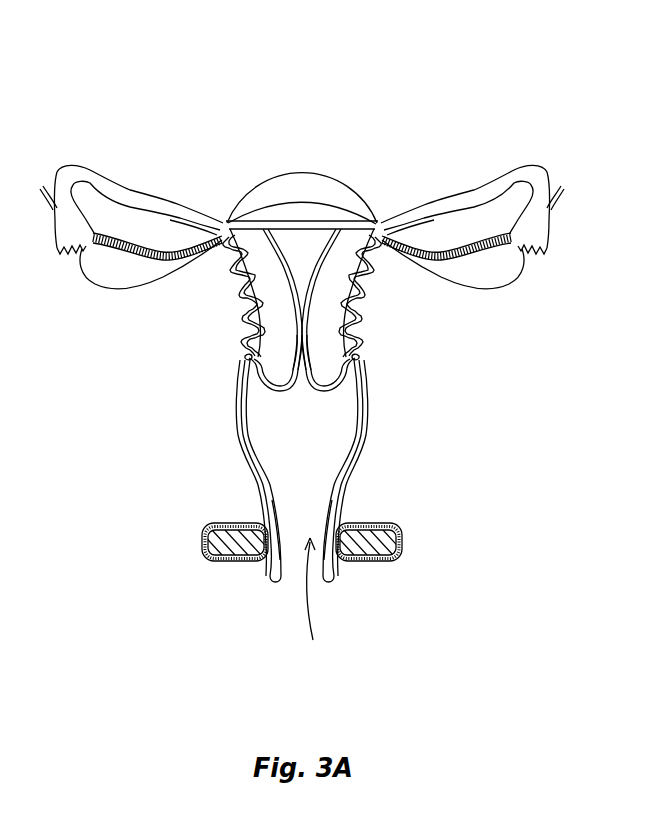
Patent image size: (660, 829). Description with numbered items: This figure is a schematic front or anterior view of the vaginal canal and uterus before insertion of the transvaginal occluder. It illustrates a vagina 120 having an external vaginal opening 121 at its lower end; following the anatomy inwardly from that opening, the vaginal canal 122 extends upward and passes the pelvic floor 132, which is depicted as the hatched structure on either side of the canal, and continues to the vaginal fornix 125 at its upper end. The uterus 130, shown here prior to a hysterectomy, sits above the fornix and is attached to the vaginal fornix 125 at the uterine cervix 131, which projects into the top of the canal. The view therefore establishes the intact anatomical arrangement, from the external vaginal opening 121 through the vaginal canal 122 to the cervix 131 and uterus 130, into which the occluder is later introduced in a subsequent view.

The uterus 130 is at (302, 242).
The uterine cervix 131 is at (321, 373).
The vaginal fornix 125 is at (281, 395).
The vagina 120 is at (322, 540).
The vaginal canal 122 is at (280, 513).
The external vaginal opening 121 is at (310, 603).
The pelvic floor 132 is at (402, 540).